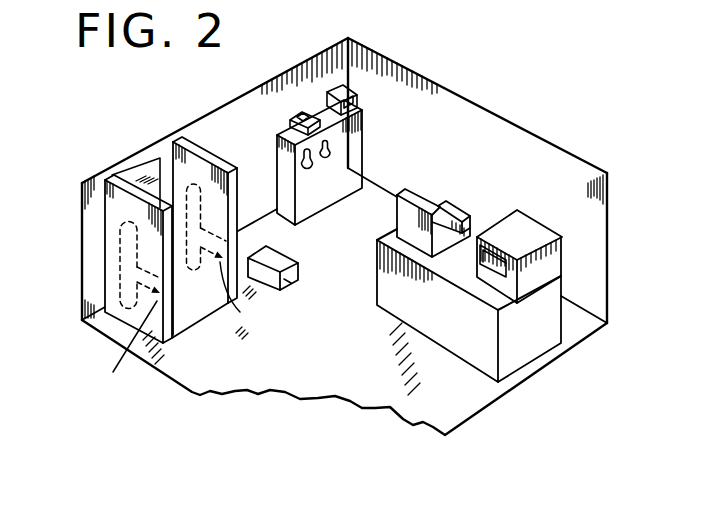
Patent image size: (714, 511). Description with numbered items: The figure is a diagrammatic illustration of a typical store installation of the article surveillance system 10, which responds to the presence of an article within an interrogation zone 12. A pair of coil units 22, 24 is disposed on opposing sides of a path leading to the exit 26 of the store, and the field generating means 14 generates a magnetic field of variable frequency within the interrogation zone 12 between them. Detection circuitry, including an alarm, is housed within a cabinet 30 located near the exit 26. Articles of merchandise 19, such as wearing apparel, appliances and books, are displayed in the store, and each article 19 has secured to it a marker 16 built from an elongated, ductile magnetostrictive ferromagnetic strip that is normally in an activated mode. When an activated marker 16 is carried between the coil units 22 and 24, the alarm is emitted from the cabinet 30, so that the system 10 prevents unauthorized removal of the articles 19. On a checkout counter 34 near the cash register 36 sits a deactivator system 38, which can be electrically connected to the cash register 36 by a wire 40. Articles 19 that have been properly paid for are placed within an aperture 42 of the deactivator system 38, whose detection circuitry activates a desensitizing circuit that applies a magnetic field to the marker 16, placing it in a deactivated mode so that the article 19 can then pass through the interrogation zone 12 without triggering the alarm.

The article surveillance system 10 is at (252, 340).
The interrogation zone 12 is at (215, 315).
The field generating means 14 is at (280, 256).
The marker 16 is at (302, 114).
The article 19 is at (298, 157).
The coil unit 22 is at (126, 229).
The coil unit 24 is at (196, 188).
The exit 26 is at (148, 168).
The cabinet 30 is at (287, 282).
The checkout counter cabinet 34 is at (475, 344).
The cash register 36 is at (420, 202).
The deactivator system 38 is at (517, 228).
The wire 40 is at (438, 274).
The aperture 42 is at (493, 266).